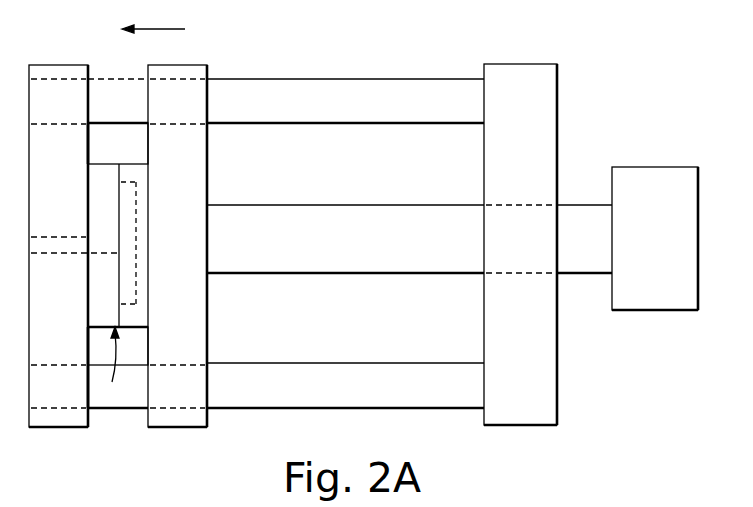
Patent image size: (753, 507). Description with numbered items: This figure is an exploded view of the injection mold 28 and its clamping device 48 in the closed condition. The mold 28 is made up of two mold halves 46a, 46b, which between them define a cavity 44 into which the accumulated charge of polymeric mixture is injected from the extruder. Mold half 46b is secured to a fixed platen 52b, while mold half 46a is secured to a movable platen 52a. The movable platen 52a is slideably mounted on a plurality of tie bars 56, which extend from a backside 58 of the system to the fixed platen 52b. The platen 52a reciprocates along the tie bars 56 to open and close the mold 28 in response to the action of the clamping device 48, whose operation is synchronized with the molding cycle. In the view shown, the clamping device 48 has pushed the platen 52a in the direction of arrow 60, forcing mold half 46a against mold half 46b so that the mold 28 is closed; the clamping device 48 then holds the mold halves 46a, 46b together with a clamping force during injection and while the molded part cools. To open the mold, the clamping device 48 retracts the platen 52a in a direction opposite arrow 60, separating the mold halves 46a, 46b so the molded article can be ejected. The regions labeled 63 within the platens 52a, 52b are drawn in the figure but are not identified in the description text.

The fixed platen 52b is at (55, 64).
The movable platen 52a is at (163, 428).
The guide channel 63 is at (50, 125).
The mold half 46b is at (93, 163).
The mold half 46a is at (138, 328).
The cavity 44 is at (138, 253).
The injection mold 28 is at (124, 366).
The tie bars 56 is at (380, 121).
The backside 58 is at (550, 137).
The clamping device 48 is at (627, 305).
The arrow 60 is at (170, 29).